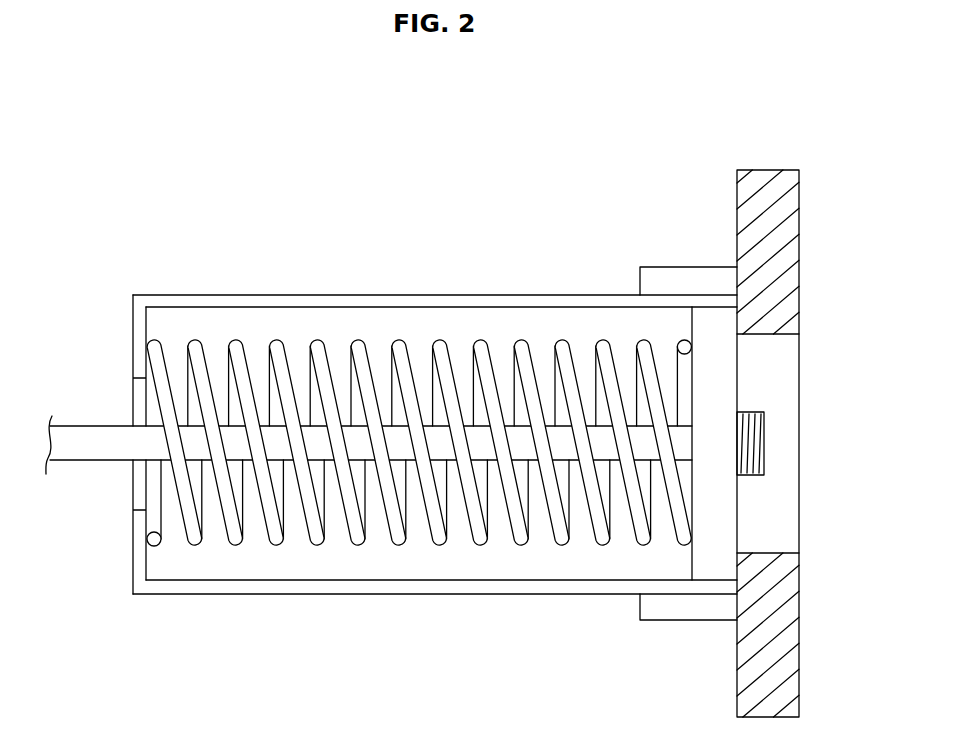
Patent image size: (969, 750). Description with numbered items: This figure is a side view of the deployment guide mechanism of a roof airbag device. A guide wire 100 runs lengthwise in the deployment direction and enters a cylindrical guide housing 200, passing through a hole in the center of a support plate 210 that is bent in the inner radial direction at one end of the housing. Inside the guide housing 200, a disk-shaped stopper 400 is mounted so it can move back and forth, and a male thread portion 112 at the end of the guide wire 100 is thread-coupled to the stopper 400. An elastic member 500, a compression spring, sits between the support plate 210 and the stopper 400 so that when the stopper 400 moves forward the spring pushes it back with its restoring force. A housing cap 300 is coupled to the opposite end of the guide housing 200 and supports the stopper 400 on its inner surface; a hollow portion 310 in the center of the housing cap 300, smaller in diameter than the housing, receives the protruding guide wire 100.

The guide wire 100 is at (88, 443).
The male thread portion 112 is at (750, 442).
The guide housing 200 is at (352, 302).
The support plate 210 is at (137, 407).
The housing cap 300 is at (768, 247).
The hollow portion 310 is at (766, 336).
The stopper 400 is at (713, 522).
The elastic member 500 is at (524, 362).